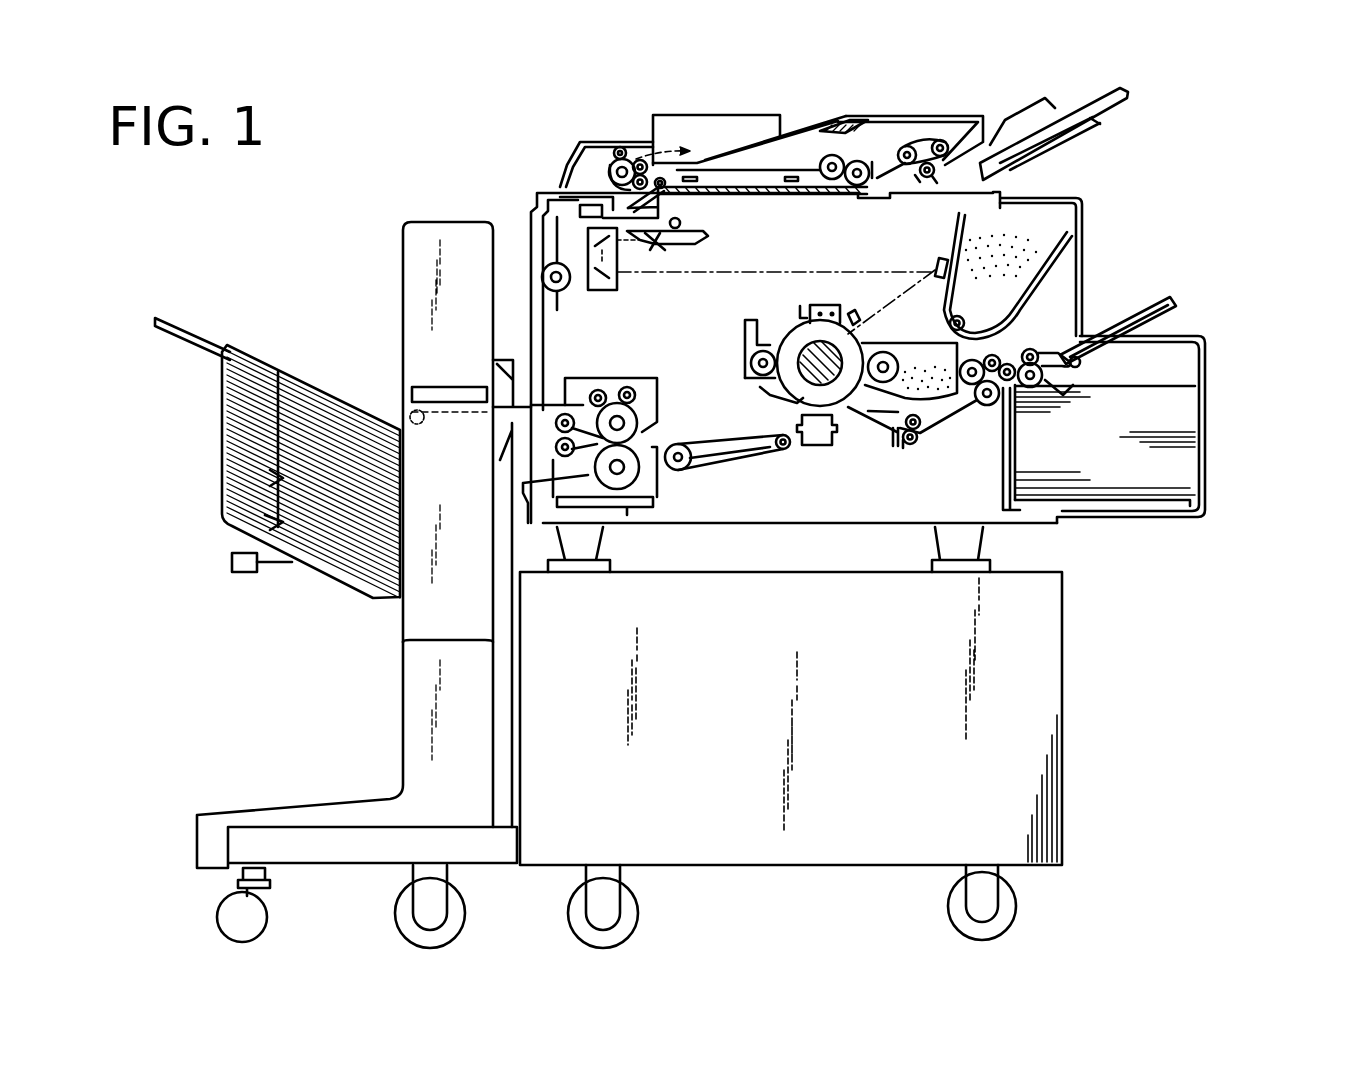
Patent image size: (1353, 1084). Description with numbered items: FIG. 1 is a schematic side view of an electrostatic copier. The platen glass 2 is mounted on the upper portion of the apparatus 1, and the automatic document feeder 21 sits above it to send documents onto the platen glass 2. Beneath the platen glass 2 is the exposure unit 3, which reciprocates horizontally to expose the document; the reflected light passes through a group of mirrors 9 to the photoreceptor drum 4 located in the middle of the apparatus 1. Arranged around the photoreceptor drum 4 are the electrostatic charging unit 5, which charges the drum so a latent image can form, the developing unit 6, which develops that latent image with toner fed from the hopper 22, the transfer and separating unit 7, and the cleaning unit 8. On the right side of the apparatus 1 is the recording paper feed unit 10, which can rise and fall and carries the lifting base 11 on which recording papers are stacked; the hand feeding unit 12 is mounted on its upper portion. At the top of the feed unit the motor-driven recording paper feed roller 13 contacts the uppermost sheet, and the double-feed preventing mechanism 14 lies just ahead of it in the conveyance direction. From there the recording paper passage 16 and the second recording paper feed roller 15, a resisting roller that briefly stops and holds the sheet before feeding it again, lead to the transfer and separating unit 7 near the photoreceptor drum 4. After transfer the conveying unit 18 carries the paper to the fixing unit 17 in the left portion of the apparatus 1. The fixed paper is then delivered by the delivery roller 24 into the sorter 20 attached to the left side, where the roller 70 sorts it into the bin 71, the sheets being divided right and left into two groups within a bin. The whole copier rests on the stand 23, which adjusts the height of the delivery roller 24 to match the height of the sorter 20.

The apparatus 1 is at (525, 240).
The platen glass 2 is at (757, 186).
The exposure unit 3 is at (680, 223).
The photoreceptor drum 4 is at (845, 355).
The electrostatic charging unit 5 is at (820, 304).
The developing unit 6 is at (935, 358).
The transfer and separating unit 7 is at (820, 434).
The cleaning unit 8 is at (745, 342).
The group of mirrors 9 is at (617, 280).
The recording paper feed unit 10 is at (1215, 418).
The lifting base 11 is at (1163, 505).
The hand feeding unit 12 is at (1170, 318).
The recording paper feed roller 13 is at (1032, 397).
The double-feed preventing mechanism 14 is at (987, 408).
The second recording paper feed roller 15 is at (908, 445).
The recording paper passage 16 is at (935, 433).
The fixing unit 17 is at (645, 473).
The conveying unit 18 is at (740, 462).
The sorter 20 is at (260, 348).
The automatic document feeder 21 is at (870, 116).
The hopper 22 is at (1062, 236).
The stand 23 is at (1035, 790).
The delivery roller 24 is at (557, 453).
The roller 70 is at (425, 424).
The bin 71 is at (270, 478).